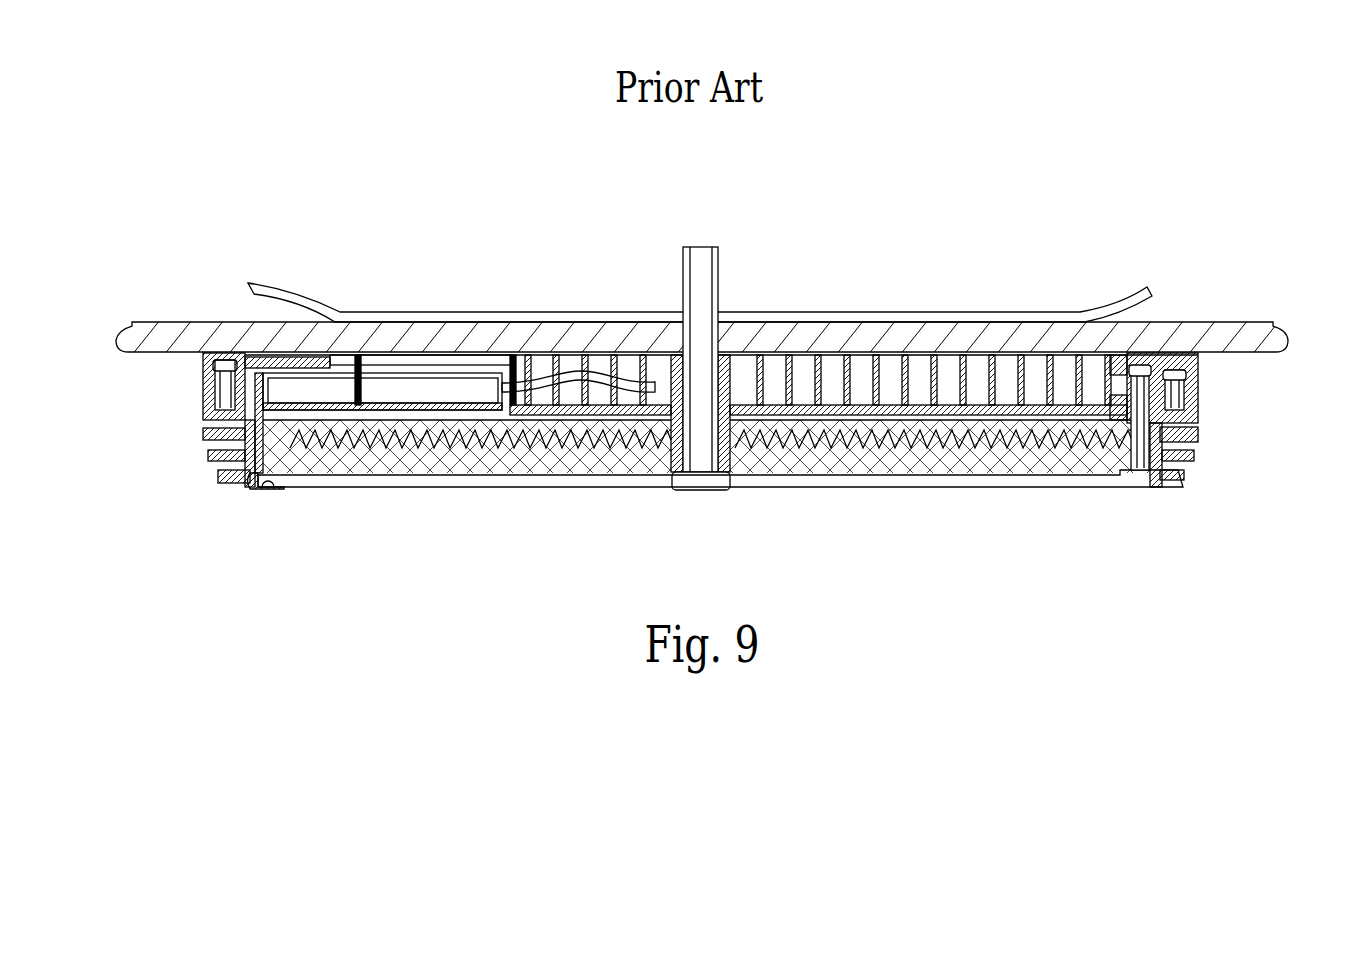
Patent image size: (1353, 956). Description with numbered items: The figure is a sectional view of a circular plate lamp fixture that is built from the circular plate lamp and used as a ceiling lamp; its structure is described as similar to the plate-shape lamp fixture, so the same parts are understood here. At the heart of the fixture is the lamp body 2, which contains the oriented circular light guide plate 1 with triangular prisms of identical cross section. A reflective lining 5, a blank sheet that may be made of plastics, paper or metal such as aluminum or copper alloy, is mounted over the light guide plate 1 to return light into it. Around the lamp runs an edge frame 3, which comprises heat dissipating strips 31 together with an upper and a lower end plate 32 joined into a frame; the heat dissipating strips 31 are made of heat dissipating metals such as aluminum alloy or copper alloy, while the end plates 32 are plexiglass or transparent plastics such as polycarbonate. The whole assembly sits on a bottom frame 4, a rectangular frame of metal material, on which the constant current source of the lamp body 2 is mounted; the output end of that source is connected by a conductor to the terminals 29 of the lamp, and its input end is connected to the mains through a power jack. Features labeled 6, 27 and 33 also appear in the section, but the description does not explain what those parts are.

The light guide plate 1 is at (1193, 457).
The lamp body 2 is at (1200, 410).
The edge frame 3 is at (1172, 480).
The bottom frame 4 is at (1150, 278).
The reflective lining 5 is at (1200, 365).
The side frame 6 is at (213, 389).
The fin 27 is at (220, 466).
The terminal 29 is at (390, 392).
The heat dissipating strip 31 is at (252, 488).
The end plate 32 is at (210, 453).
The fin 33 is at (207, 435).